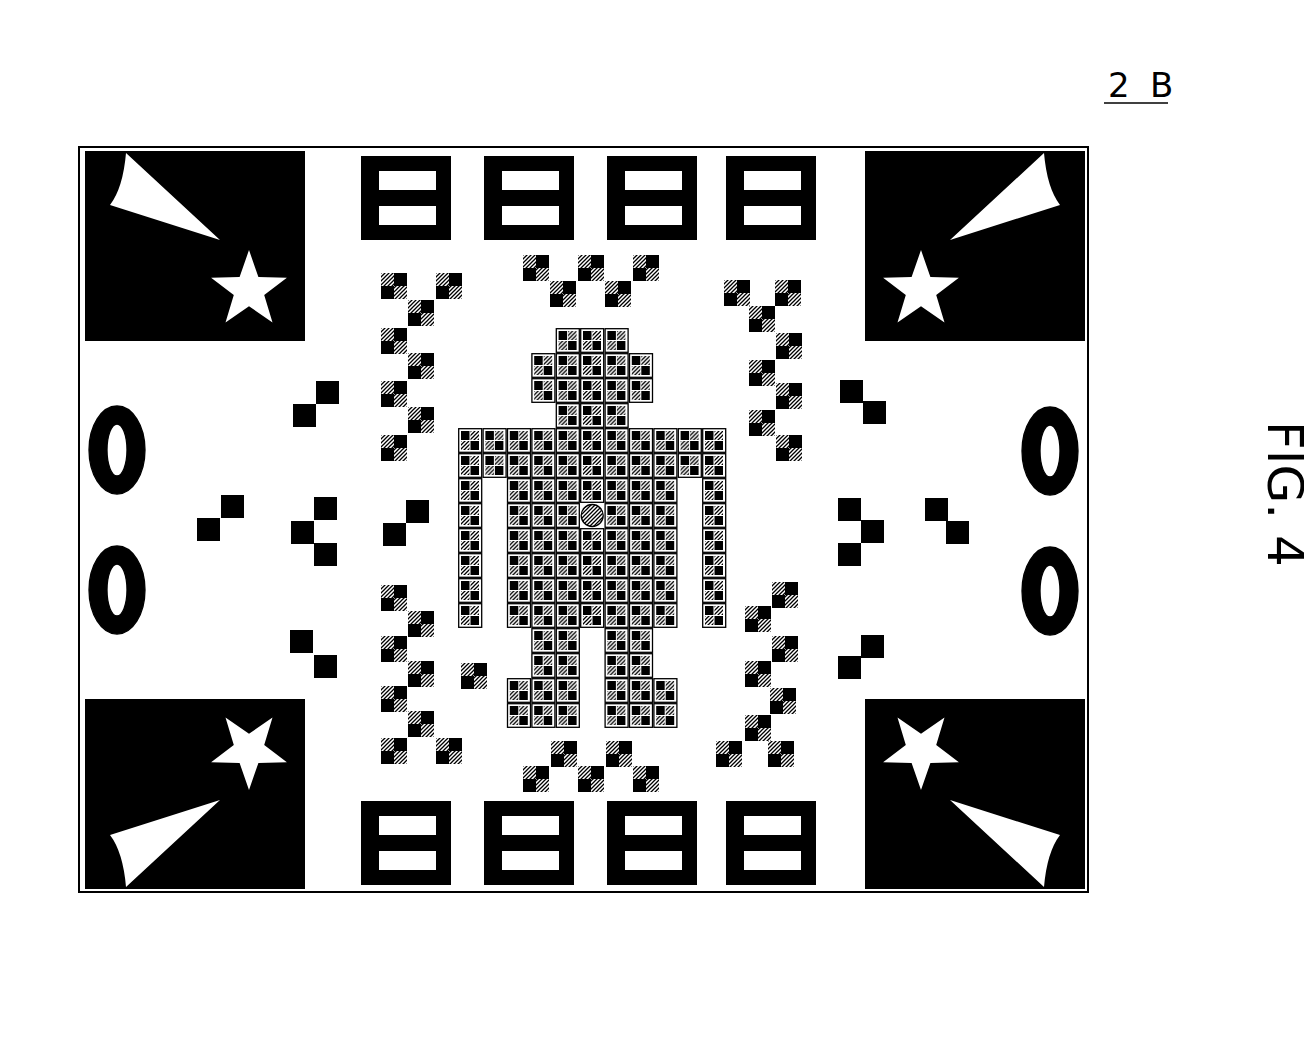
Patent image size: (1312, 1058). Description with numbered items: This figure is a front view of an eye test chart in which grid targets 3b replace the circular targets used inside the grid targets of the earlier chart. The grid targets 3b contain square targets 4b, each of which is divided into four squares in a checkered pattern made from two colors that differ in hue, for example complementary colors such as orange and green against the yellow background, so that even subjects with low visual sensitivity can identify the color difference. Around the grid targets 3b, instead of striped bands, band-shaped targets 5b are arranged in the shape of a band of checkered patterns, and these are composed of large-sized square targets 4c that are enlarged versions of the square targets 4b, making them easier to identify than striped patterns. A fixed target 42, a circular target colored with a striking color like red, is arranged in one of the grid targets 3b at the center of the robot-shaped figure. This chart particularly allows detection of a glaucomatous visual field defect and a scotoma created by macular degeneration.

The grid targets 3b is at (677, 405).
The square targets 4b is at (528, 345).
The large-sized square targets 4c is at (438, 912).
The band-shaped targets 5b is at (793, 575).
The fixed target 42 is at (590, 520).